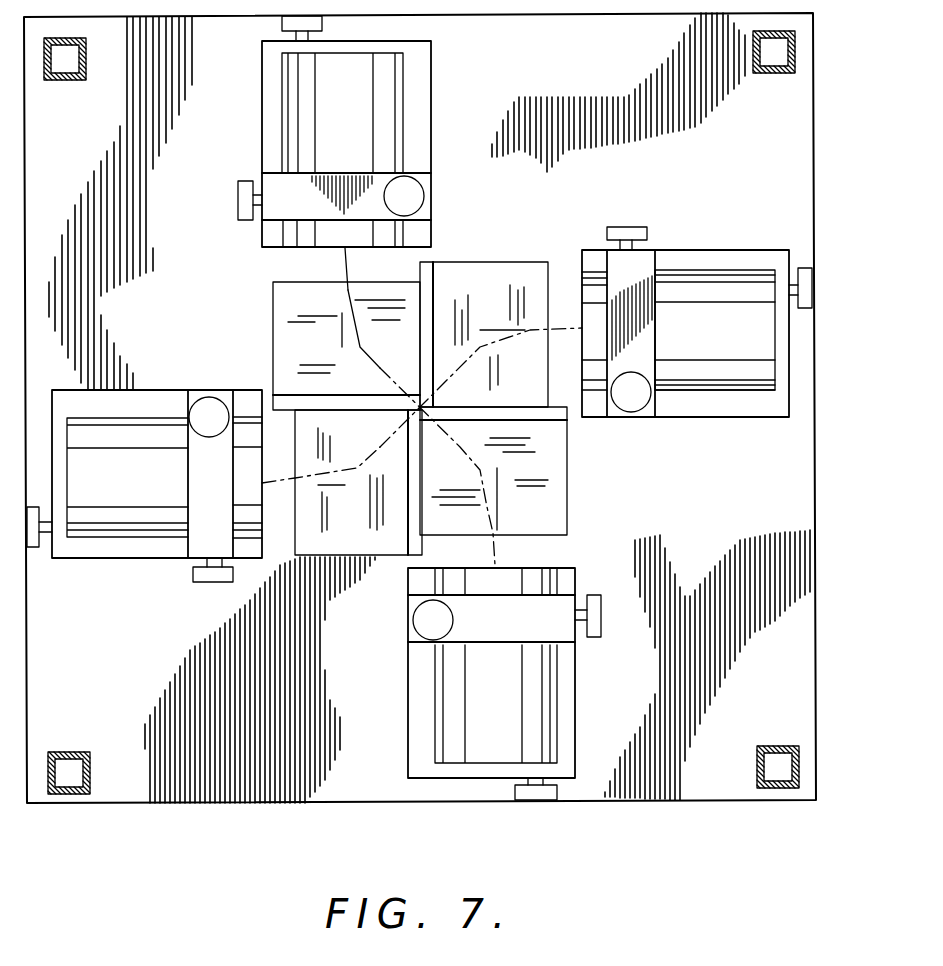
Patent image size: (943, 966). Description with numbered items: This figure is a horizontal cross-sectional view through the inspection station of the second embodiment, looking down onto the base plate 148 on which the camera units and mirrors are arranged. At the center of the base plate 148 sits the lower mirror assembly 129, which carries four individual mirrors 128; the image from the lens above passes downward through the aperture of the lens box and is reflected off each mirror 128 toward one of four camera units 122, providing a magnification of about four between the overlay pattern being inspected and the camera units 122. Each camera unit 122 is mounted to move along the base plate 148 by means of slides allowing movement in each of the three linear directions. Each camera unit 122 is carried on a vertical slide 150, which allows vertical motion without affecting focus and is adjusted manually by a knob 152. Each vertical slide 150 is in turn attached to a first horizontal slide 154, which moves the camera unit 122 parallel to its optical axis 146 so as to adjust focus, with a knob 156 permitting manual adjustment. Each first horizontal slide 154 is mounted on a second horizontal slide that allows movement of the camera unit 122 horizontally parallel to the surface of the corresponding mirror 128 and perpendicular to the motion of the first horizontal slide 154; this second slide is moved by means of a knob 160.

The camera unit 122 is at (732, 390).
The mirror 128 is at (487, 262).
The lower mirror assembly 129 is at (272, 350).
The optical axis 146 is at (535, 325).
The base plate 148 is at (228, 806).
The vertical slide 150 is at (655, 330).
The knob 152 is at (620, 417).
The first horizontal slide 154 is at (690, 420).
The knob 156 is at (805, 268).
The knob 160 is at (642, 225).